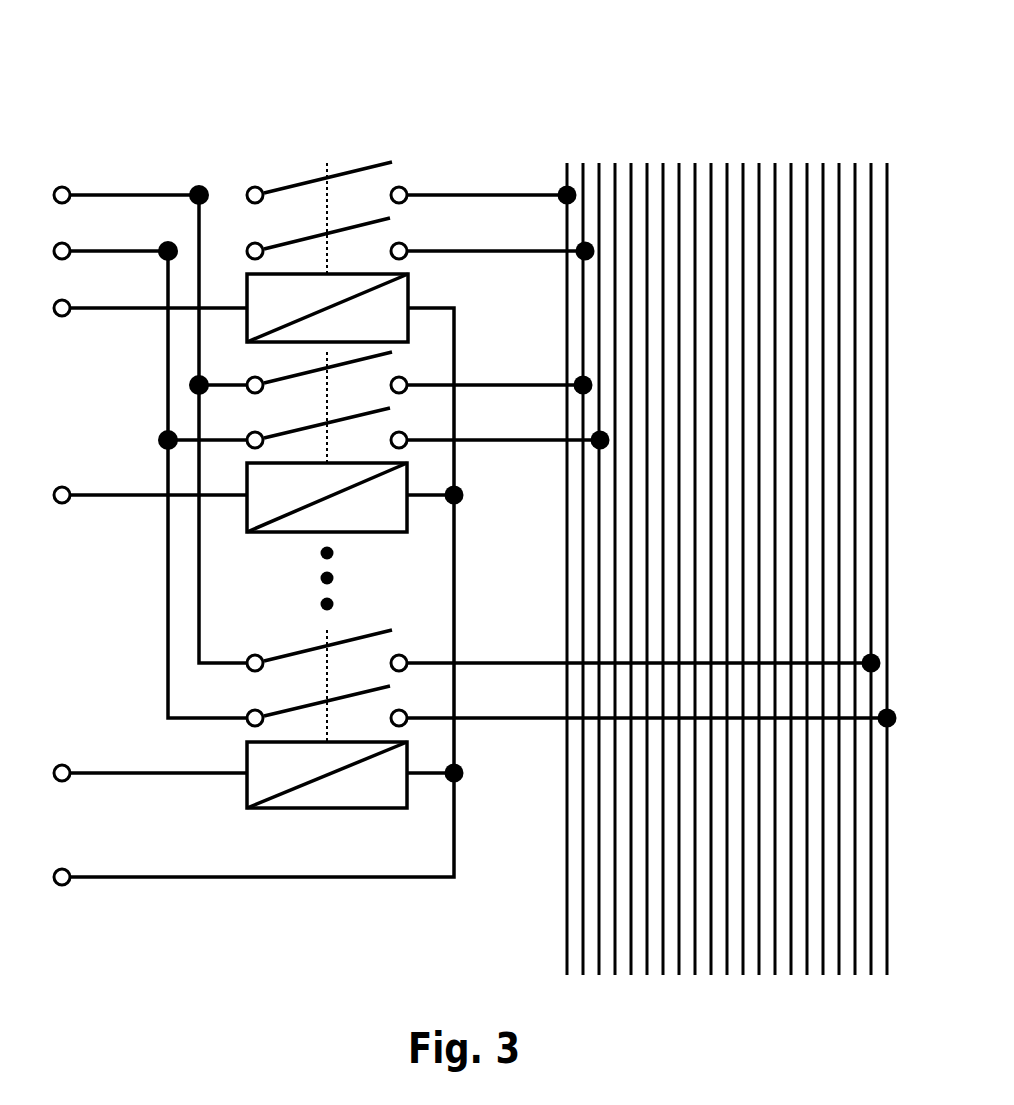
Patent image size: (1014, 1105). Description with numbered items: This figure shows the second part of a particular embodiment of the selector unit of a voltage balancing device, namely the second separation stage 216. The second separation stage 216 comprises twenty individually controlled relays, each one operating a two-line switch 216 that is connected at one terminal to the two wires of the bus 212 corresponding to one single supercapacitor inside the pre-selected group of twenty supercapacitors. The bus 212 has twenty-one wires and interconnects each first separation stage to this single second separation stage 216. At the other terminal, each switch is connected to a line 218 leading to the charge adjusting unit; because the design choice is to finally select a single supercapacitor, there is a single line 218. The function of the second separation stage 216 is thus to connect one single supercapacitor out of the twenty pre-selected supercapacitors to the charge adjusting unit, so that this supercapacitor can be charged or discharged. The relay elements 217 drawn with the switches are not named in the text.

The bus 212 is at (732, 152).
The second separation stage 216 is at (487, 125).
The resistor 217 is at (400, 300).
The line 218 is at (73, 243).